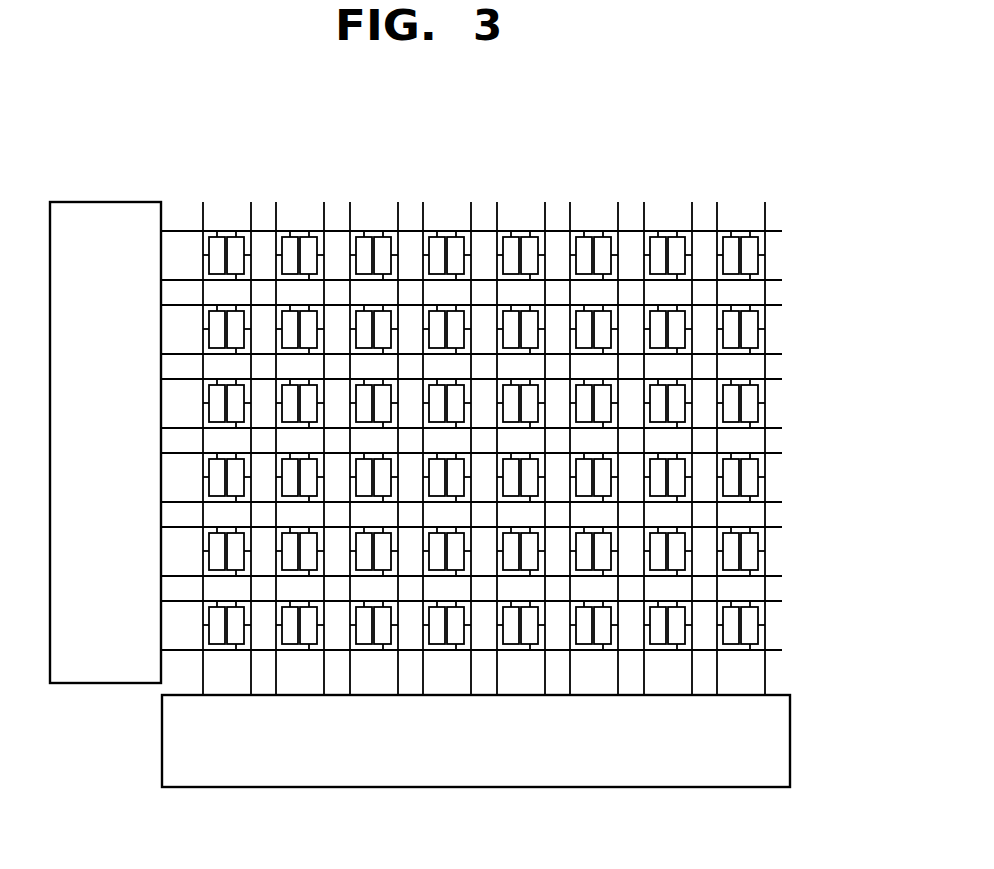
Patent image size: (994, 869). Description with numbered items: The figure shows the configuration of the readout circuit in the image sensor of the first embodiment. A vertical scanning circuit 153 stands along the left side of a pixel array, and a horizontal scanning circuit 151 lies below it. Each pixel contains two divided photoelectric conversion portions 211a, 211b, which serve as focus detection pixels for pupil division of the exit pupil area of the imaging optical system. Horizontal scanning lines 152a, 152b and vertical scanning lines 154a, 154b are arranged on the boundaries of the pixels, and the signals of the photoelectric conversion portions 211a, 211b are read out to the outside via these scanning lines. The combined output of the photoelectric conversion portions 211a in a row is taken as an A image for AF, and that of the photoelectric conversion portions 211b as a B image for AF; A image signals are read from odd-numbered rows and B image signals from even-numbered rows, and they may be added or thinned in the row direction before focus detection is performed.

The horizontal scanning circuit 151 is at (190, 788).
The vertical scanning circuit 153 is at (103, 202).
The horizontal scanning line 152a is at (252, 208).
The horizontal scanning line 152b is at (201, 218).
The vertical scanning line 154a is at (782, 280).
The vertical scanning line 154b is at (773, 230).
The photoelectric conversion portion 211a is at (236, 237).
The photoelectric conversion portion 211b is at (212, 237).